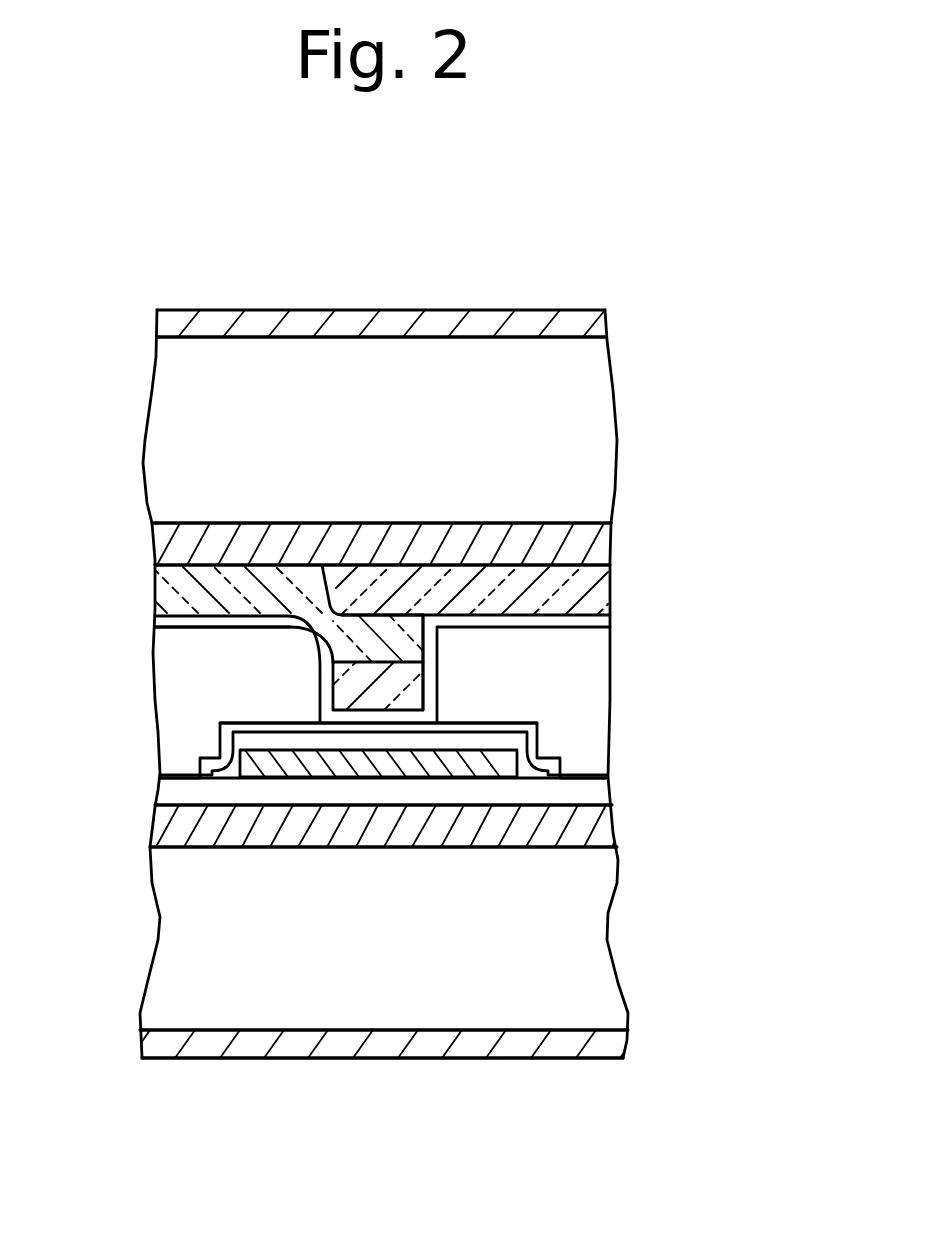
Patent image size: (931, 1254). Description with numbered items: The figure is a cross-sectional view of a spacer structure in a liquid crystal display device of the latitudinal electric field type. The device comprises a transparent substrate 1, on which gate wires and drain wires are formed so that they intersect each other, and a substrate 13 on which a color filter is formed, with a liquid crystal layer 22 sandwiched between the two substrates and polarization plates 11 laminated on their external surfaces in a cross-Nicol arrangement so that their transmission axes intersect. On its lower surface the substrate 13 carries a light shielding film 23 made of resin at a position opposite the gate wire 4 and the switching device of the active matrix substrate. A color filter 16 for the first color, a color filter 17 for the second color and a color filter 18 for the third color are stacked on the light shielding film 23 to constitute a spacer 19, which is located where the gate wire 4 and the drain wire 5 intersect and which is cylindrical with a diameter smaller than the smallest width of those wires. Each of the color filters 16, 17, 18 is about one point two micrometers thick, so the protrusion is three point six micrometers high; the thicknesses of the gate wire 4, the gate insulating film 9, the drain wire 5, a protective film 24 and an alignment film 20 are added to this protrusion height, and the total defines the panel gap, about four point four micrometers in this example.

The transparent substrate 1 is at (587, 905).
The gate wire 4 is at (162, 832).
The drain wire 5 is at (498, 767).
The gate insulating film 9 is at (583, 792).
The polarization plate 11 is at (605, 323).
The substrate 13 is at (578, 407).
The color filter for the first color 16 is at (592, 600).
The color filter for the second color 17 is at (407, 650).
The color filter for the third color 18 is at (407, 690).
The spacer 19 is at (488, 622).
The alignment film 20 is at (155, 618).
The liquid crystal layer 22 is at (163, 655).
The light shielding film 23 is at (612, 548).
The protective film 24 is at (240, 742).